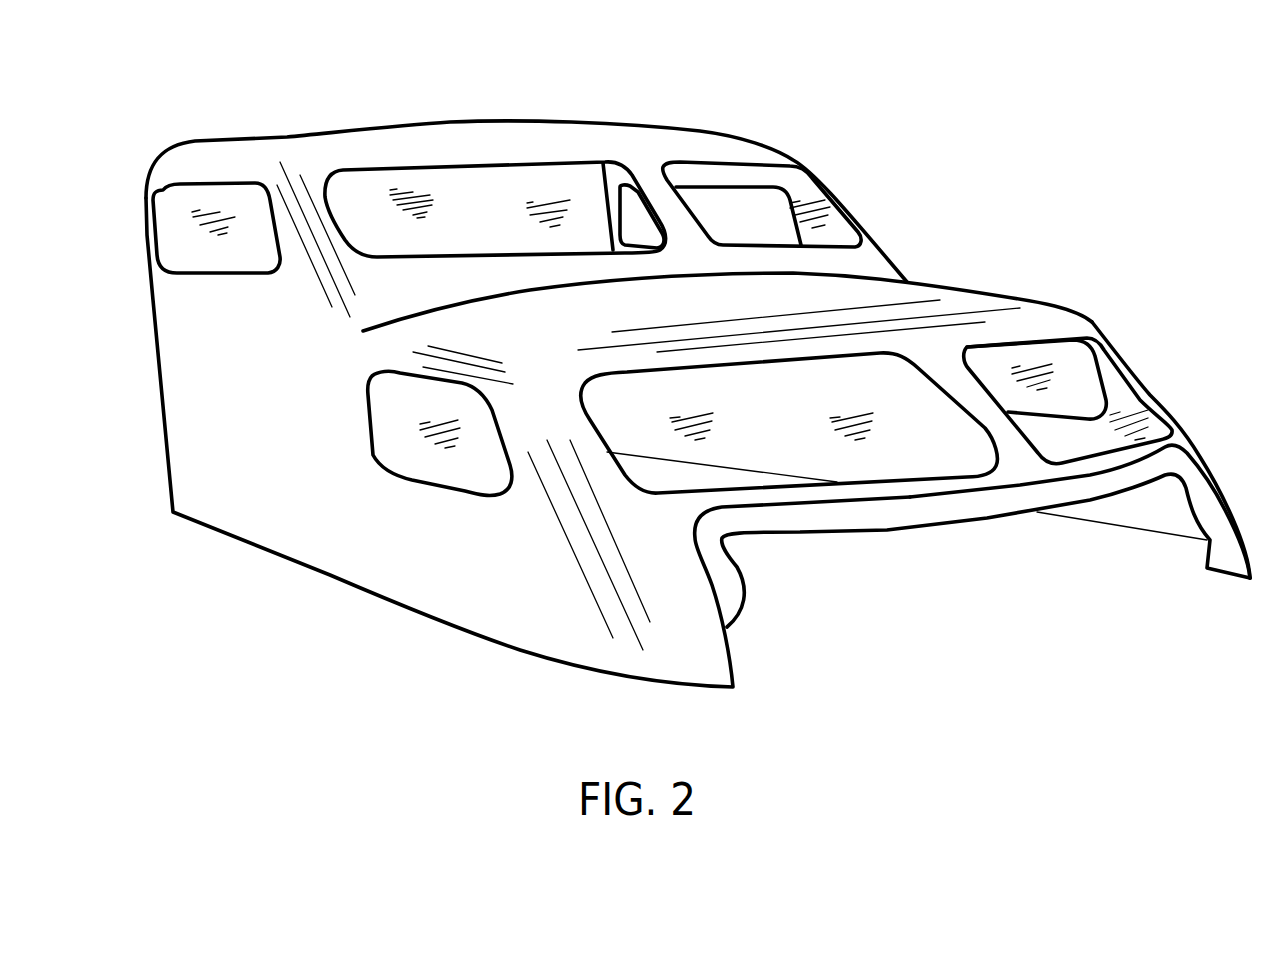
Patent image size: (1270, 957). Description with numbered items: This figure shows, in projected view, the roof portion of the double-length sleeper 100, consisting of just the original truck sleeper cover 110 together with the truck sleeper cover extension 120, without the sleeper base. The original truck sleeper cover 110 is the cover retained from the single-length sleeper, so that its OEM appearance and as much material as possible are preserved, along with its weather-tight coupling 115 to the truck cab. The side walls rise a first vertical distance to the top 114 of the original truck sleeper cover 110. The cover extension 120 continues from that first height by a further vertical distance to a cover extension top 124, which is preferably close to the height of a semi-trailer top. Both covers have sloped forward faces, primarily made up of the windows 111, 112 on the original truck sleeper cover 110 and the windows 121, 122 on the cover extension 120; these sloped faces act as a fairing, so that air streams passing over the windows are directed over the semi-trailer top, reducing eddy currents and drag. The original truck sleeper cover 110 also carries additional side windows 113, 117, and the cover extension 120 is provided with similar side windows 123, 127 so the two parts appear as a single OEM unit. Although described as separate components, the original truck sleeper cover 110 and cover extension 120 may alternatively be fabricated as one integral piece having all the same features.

The double-length sleeper 100 is at (165, 72).
The original truck sleeper cover 110 is at (1089, 312).
The window 111 is at (905, 392).
The window 112 is at (1140, 402).
The side window 113 is at (380, 430).
The top of original truck sleeper cover 114 is at (904, 290).
The weather-tight coupling 115 is at (850, 527).
The side window 117 is at (1080, 390).
The truck sleeper cover extension 120 is at (526, 188).
The window 121 is at (597, 188).
The window 122 is at (800, 195).
The side window 123 is at (180, 240).
The cover extension top 124 is at (418, 117).
The side window 127 is at (731, 200).